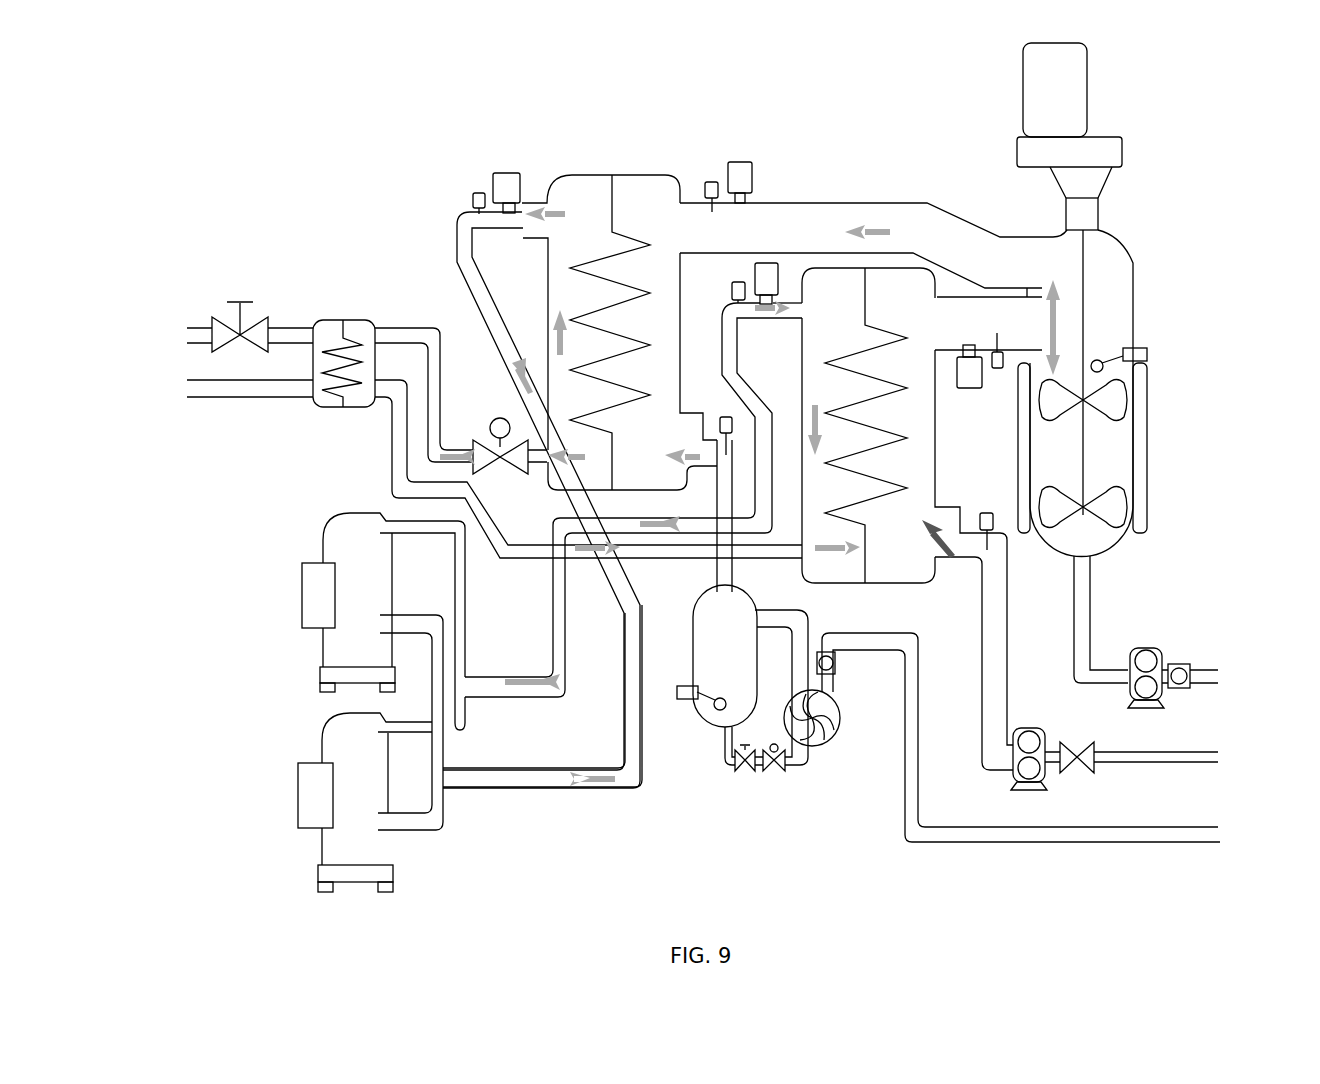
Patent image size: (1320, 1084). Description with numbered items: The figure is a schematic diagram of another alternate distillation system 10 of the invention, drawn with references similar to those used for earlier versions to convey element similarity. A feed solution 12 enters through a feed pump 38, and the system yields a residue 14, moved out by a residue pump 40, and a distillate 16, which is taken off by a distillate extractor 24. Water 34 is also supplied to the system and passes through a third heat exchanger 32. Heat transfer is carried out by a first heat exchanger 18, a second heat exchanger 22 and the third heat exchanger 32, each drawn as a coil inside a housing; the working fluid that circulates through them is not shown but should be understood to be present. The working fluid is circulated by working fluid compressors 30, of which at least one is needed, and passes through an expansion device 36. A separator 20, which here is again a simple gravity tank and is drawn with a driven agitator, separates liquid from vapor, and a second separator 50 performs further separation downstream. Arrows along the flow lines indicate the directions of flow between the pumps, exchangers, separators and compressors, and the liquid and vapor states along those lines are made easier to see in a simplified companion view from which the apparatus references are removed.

The distillation system 10 is at (262, 116).
The feed solution 12 is at (1180, 754).
The residue 14 is at (1228, 673).
The distillate 16 is at (1044, 737).
The first heat exchanger 18 is at (753, 516).
The separator 20 is at (1120, 242).
The second heat exchanger 22 is at (612, 326).
The distillate extractor 24 is at (819, 744).
The working fluid compressors 30 is at (258, 513).
The third heat exchanger 32 is at (343, 320).
The water 34 is at (227, 349).
The expansion device 36 is at (492, 470).
The feed pump 38 is at (1030, 728).
The residue pump 40 is at (1148, 648).
The second separator 50 is at (742, 605).